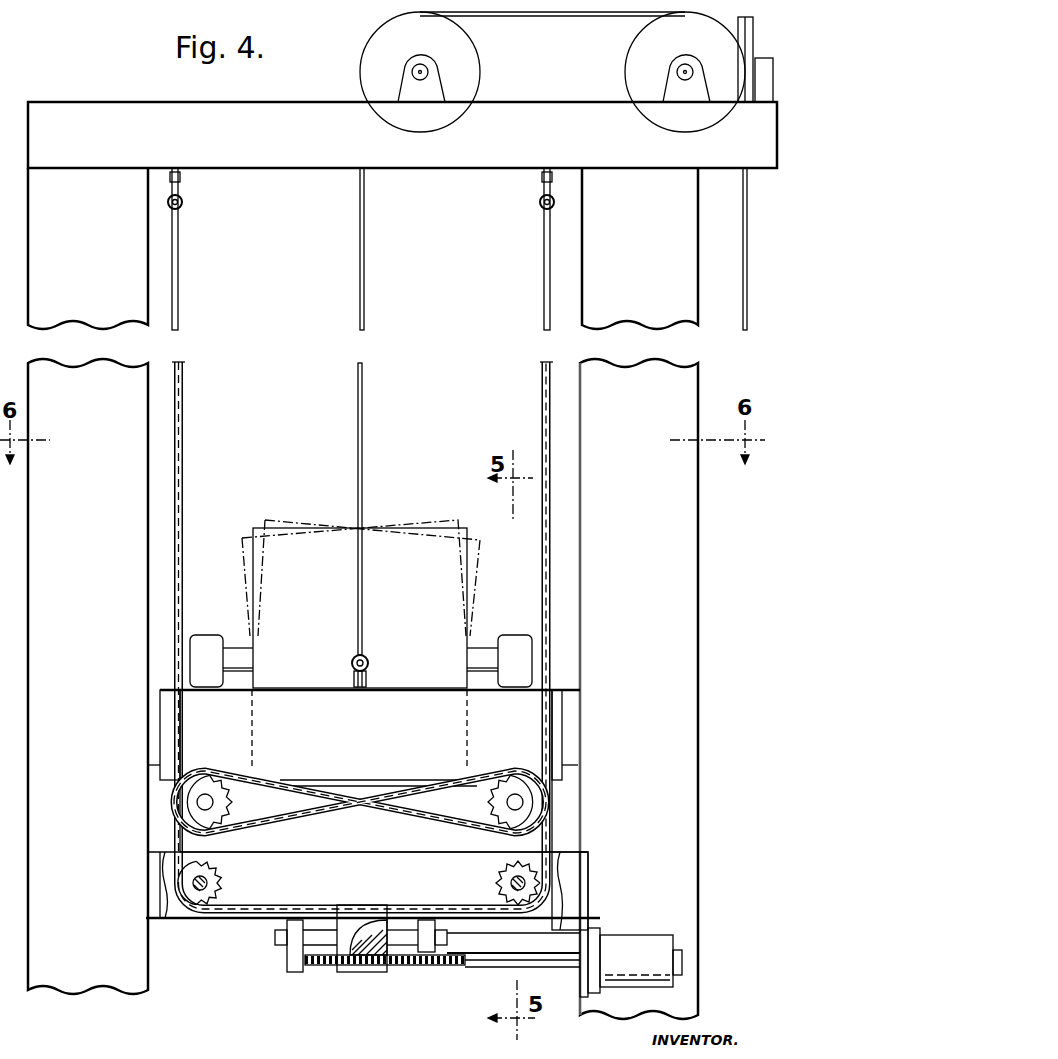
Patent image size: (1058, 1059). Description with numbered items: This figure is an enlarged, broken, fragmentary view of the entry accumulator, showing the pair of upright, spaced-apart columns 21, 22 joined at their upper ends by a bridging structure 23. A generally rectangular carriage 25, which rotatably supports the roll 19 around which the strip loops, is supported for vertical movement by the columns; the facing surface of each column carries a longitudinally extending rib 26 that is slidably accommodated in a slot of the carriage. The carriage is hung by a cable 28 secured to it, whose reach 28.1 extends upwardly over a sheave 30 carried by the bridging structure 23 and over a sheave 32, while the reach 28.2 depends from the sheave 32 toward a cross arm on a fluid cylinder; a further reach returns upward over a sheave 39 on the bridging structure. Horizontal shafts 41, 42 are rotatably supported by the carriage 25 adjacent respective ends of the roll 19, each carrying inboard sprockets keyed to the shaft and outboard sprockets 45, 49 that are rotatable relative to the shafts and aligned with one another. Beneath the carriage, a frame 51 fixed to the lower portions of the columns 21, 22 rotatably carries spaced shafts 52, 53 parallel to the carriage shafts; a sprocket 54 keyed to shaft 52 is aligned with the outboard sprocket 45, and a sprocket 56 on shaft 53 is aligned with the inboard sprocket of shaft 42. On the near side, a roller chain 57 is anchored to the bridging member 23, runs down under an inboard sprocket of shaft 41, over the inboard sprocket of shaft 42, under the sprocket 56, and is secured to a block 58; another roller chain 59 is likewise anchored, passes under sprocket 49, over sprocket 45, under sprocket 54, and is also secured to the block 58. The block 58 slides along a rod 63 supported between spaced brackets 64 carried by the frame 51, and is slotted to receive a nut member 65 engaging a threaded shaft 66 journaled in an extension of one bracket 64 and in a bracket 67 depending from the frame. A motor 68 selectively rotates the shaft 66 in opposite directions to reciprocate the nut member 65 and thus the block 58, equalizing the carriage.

The roll 19 is at (283, 550).
The column 21 is at (40, 562).
The column 22 is at (683, 578).
The bridging structure 23 is at (280, 155).
The carriage 25 is at (396, 741).
The rib 26 is at (148, 410).
The cable 28 is at (356, 447).
The cable reach 28.1 is at (364, 280).
The cable reach 28.2 is at (745, 263).
The sheave 30 is at (370, 50).
The sheave 32 is at (630, 52).
The sheave 39 is at (753, 45).
The horizontal shaft 41 is at (522, 805).
The horizontal shaft 42 is at (213, 802).
The outboard sprocket 45 is at (530, 797).
The outboard sprocket 49 is at (180, 800).
The frame 51 is at (402, 880).
The shaft 52 is at (513, 880).
The shaft 53 is at (207, 878).
The sprocket 54 is at (505, 888).
The sprocket 56 is at (215, 890).
The roller chain 57 is at (546, 270).
The block 58 is at (345, 912).
The roller chain 59 is at (178, 283).
The rod 63 is at (325, 938).
The bracket 64 is at (290, 960).
The nut member 65 is at (362, 968).
The threaded shaft 66 is at (468, 955).
The bracket 67 is at (590, 890).
The motor 68 is at (641, 948).